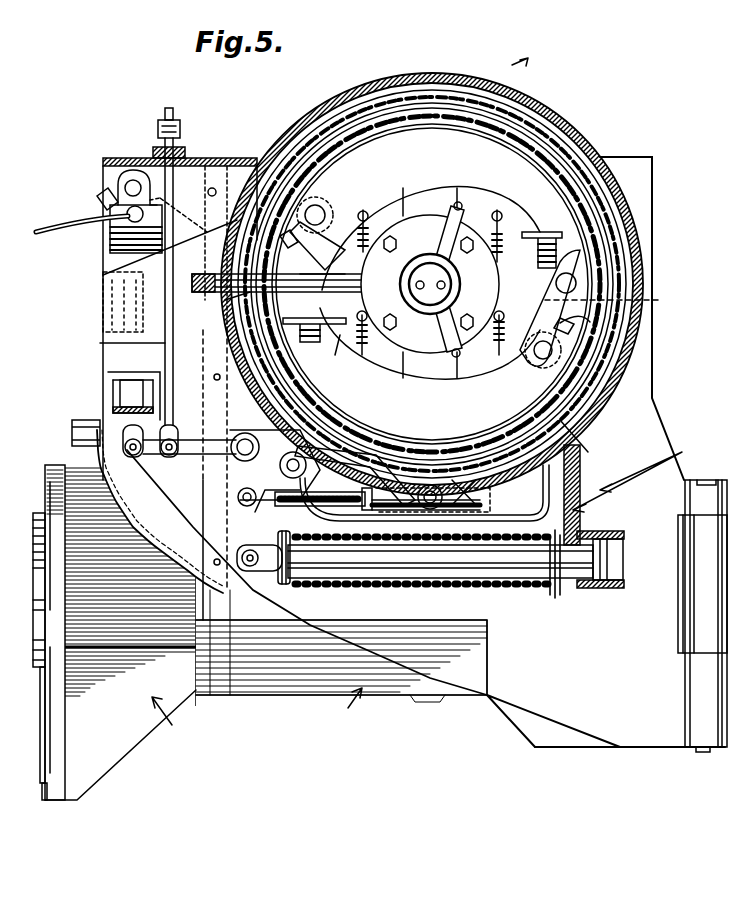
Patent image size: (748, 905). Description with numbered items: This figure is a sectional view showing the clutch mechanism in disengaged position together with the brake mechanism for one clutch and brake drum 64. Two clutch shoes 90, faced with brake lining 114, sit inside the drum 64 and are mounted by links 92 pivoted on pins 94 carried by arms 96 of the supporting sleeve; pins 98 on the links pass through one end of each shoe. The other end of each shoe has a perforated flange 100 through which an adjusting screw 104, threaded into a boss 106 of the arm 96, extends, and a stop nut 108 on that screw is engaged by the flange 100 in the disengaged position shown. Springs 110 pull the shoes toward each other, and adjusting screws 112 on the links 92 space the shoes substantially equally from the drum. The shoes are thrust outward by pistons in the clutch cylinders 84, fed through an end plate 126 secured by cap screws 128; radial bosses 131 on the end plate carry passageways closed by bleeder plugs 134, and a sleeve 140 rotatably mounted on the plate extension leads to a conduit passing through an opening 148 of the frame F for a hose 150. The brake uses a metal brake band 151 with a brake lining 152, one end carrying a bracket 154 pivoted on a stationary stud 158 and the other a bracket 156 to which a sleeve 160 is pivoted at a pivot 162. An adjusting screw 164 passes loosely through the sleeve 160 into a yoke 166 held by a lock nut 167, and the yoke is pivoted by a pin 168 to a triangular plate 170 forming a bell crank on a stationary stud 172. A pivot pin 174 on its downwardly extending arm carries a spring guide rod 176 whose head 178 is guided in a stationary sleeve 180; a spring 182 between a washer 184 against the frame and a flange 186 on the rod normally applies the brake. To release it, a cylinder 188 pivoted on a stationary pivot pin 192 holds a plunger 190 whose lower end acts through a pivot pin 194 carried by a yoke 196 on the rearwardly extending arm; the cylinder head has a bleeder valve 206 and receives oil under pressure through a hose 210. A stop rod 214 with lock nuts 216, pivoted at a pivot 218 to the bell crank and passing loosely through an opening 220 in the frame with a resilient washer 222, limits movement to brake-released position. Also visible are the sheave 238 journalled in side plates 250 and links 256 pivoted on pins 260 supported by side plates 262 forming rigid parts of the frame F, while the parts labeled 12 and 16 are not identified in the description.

The base plate 12 is at (45, 757).
The motor housing 16 is at (46, 476).
The clutch and brake drum 64 is at (553, 152).
The clutch cylinder 84 is at (430, 283).
The clutch shoe 90 is at (432, 284).
The link 92 is at (434, 294).
The pin 94 is at (574, 278).
The arm 96 is at (430, 283).
The pin 98 is at (429, 284).
The flange 100 is at (426, 284).
The adjusting screw 104 is at (557, 255).
The boss 106 is at (618, 299).
The stop nut 108 is at (332, 356).
The spring 110 is at (370, 335).
The adjusting screw 112 is at (592, 322).
The brake lining 114 is at (343, 168).
The end plate 126 is at (486, 283).
The cap screw 128 is at (468, 318).
The radial boss 131 is at (448, 236).
The bleeder plug 134 is at (462, 208).
The sleeve 140 is at (335, 273).
The opening 148 is at (228, 305).
The hose 150 is at (206, 292).
The brake band 151 is at (560, 400).
The brake lining 152 is at (583, 380).
The bracket 154 is at (250, 442).
The bracket 156 is at (458, 490).
The stud 158 is at (280, 466).
The sleeve 160 is at (426, 500).
The pivot 162 is at (475, 498).
The adjusting screw 164 is at (332, 498).
The yoke 166 is at (278, 508).
The lock nut 167 is at (364, 504).
The pin 168 is at (238, 495).
The triangular plate 170 is at (196, 525).
The stationary stud 172 is at (236, 446).
The pivot pin 174 is at (250, 572).
The spring guide rod 176 is at (375, 565).
The head 178 is at (605, 588).
The stationary sleeve 180 is at (620, 542).
The spring 182 is at (430, 588).
The washer 184 is at (553, 592).
The flange 186 is at (290, 586).
The cylinder 188 is at (115, 395).
The plunger 190 is at (128, 387).
The stationary pivot pin 192 is at (122, 165).
The pivot pin 194 is at (132, 458).
The yoke 196 is at (100, 440).
The bleeder valve 206 is at (118, 210).
The hose 210 is at (40, 222).
The stop rod 214 is at (174, 192).
The lock nut 216 is at (181, 130).
The pivot 218 is at (180, 447).
The opening 220 is at (137, 178).
The resilient washer 222 is at (186, 152).
The sheave 238 is at (120, 385).
The side plate 250 is at (540, 738).
The link 256 is at (690, 578).
The pin 260 is at (705, 752).
The side plate 262 is at (630, 713).